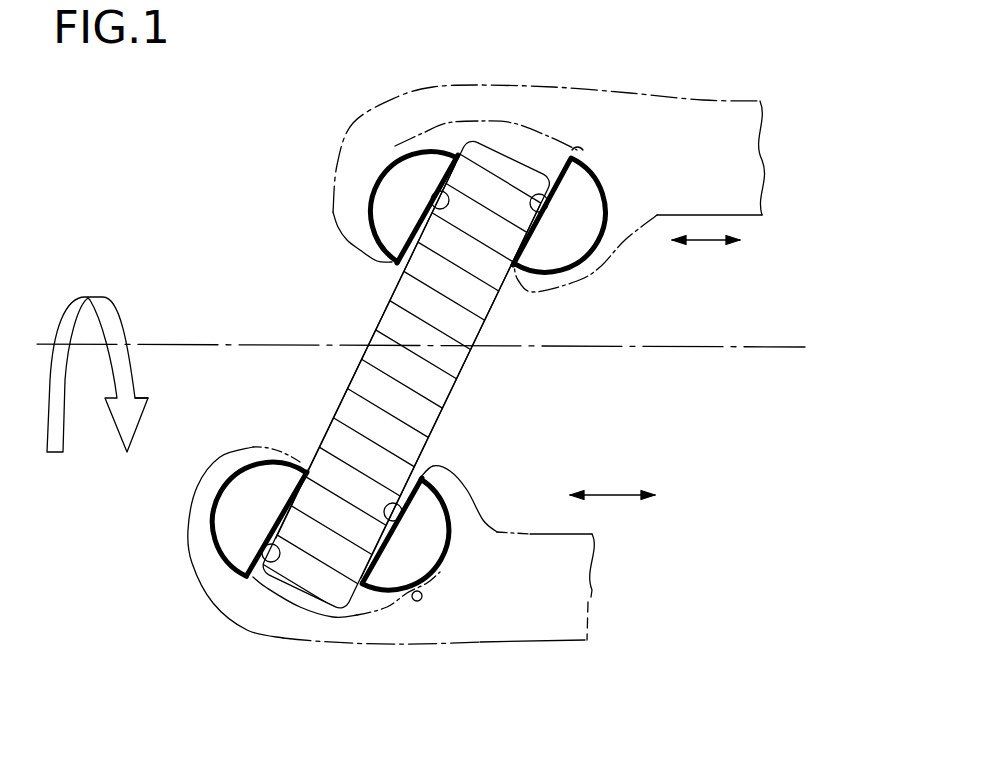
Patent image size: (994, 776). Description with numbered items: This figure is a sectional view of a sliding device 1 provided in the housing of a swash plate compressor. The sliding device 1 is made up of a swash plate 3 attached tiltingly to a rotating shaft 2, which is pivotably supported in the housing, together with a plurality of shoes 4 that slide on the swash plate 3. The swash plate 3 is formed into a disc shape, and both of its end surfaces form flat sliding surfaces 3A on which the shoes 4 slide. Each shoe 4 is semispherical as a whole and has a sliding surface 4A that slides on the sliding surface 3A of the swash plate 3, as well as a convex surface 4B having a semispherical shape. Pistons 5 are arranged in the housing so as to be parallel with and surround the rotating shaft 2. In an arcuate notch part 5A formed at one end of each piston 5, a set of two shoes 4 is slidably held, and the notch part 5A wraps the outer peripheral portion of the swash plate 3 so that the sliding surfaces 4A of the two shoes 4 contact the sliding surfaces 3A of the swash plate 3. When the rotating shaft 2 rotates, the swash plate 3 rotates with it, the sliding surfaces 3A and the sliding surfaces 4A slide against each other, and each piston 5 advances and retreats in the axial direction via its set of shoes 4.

The sliding device 1 is at (440, 432).
The rotating shaft 2 is at (243, 344).
The swash plate 3 is at (343, 379).
The sliding surface 3A is at (400, 279).
The shoe 4 is at (426, 312).
The sliding surface 4A is at (431, 203).
The convex surface 4B is at (402, 150).
The piston 5 is at (752, 150).
The notch part 5A is at (578, 152).